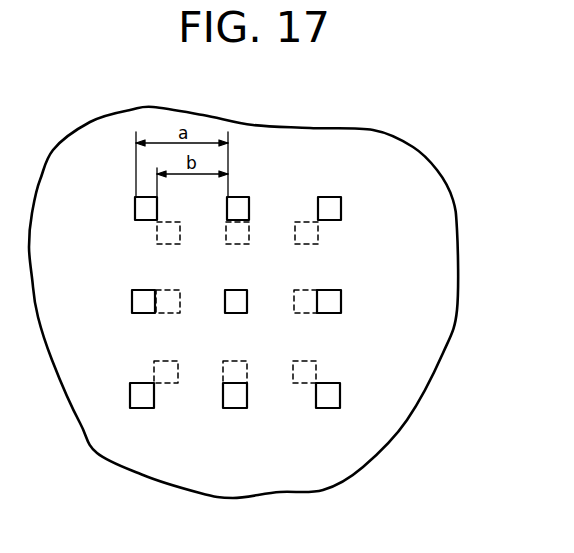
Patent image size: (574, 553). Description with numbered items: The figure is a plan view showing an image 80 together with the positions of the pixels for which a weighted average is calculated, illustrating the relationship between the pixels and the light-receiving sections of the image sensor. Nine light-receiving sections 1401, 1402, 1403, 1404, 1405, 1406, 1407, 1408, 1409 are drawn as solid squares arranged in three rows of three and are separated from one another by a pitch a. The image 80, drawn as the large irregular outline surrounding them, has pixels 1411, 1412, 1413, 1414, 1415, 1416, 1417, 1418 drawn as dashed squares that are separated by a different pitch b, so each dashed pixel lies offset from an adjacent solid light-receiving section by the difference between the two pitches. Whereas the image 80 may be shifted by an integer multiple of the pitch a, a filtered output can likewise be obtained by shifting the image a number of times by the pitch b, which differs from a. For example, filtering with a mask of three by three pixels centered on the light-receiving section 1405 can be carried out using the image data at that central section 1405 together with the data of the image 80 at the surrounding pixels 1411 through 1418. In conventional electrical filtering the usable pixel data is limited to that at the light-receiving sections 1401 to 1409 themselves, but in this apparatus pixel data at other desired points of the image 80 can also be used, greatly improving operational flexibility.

The image 80 is at (433, 348).
The light-receiving section 1401 is at (143, 207).
The light-receiving section 1402 is at (235, 205).
The light-receiving section 1403 is at (330, 208).
The light-receiving section 1404 is at (138, 299).
The light-receiving section 1405 is at (237, 298).
The light-receiving section 1406 is at (331, 299).
The light-receiving section 1407 is at (142, 400).
The light-receiving section 1408 is at (235, 400).
The light-receiving section 1409 is at (328, 400).
The pixel 1411 is at (160, 235).
The pixel 1412 is at (243, 231).
The pixel 1413 is at (312, 233).
The pixel 1414 is at (166, 296).
The pixel 1415 is at (302, 294).
The pixel 1416 is at (157, 370).
The pixel 1417 is at (239, 367).
The pixel 1418 is at (312, 366).